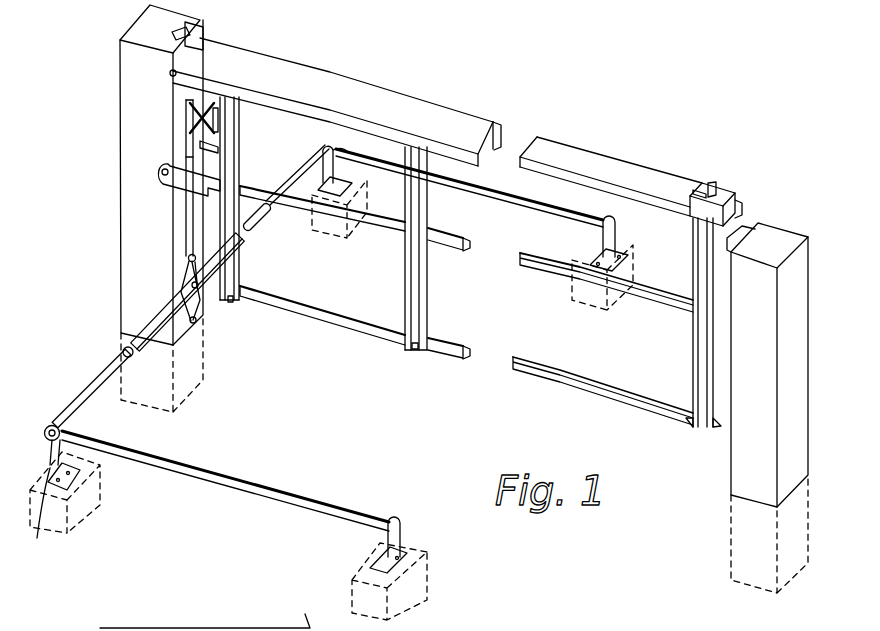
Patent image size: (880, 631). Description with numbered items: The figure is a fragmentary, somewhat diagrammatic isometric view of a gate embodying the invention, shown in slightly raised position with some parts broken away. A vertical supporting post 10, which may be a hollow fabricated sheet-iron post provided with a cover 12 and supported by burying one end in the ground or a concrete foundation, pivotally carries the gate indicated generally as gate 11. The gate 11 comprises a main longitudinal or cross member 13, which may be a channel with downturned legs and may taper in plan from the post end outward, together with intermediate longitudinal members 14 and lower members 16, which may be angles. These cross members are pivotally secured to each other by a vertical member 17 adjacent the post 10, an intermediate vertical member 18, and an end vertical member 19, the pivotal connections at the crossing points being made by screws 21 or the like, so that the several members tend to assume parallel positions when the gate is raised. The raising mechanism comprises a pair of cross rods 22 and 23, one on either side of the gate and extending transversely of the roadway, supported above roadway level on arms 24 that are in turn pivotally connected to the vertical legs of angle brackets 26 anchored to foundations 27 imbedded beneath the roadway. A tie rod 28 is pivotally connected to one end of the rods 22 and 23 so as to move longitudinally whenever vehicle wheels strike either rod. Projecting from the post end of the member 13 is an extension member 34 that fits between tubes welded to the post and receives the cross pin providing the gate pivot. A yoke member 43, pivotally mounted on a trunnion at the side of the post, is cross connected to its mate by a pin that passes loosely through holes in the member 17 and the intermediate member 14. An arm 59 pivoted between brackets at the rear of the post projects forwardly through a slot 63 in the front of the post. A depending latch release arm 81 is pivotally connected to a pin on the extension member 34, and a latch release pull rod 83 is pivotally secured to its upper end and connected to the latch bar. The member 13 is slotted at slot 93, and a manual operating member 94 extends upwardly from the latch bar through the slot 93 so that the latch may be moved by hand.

The vertical supporting post 10 is at (121, 246).
The gate 11 is at (452, 104).
The cover 12 is at (136, 29).
The main longitudinal or cross member 13 is at (500, 120).
The intermediate longitudinal members 14 is at (451, 233).
The lower members 16 is at (450, 346).
The vertical member 17 is at (240, 266).
The intermediate vertical member 18 is at (429, 292).
The end vertical member 19 is at (693, 366).
The screws 21 is at (232, 302).
The cross rod 22 is at (228, 471).
The cross rod 23 is at (558, 212).
The arms 24 is at (68, 432).
The angle brackets 26 is at (44, 516).
The foundations 27 is at (100, 481).
The tie rod 28 is at (108, 378).
The extension member 34 is at (200, 44).
The yoke member 43 is at (170, 186).
The arm 59 is at (185, 118).
The slot 63 is at (197, 108).
The latch release arm 81 is at (219, 128).
The latch release pull rod 83 is at (505, 140).
The slot 93 is at (712, 183).
The manual operating member 94 is at (720, 191).